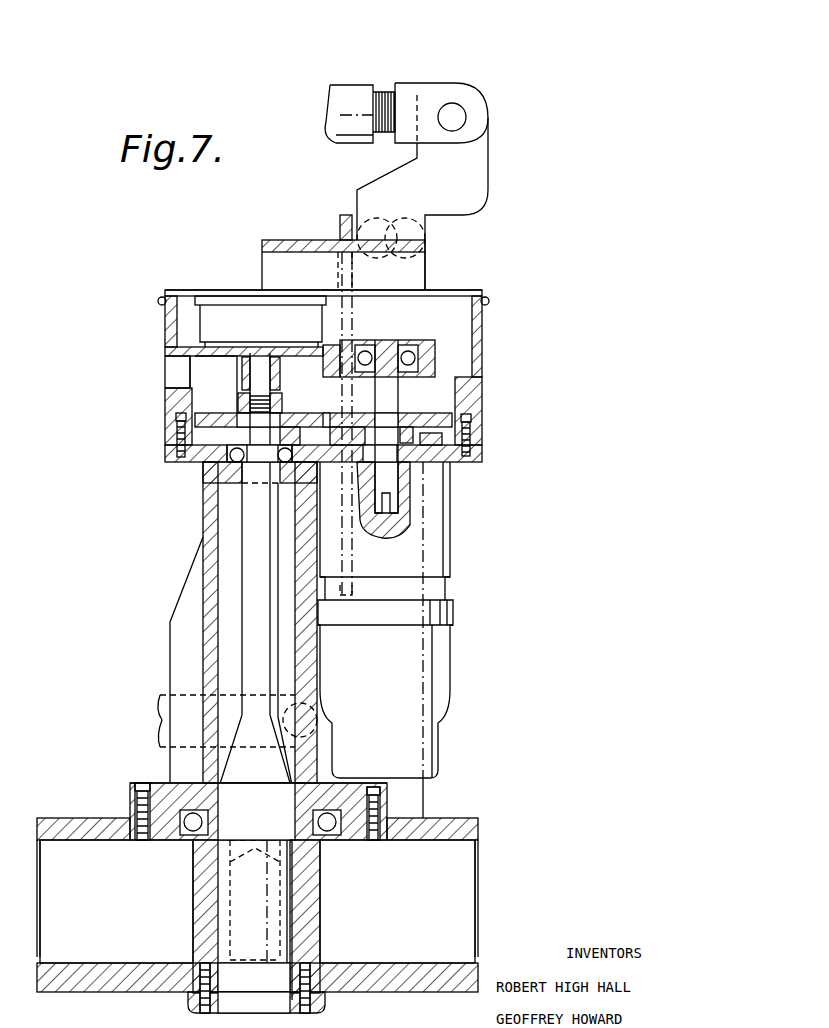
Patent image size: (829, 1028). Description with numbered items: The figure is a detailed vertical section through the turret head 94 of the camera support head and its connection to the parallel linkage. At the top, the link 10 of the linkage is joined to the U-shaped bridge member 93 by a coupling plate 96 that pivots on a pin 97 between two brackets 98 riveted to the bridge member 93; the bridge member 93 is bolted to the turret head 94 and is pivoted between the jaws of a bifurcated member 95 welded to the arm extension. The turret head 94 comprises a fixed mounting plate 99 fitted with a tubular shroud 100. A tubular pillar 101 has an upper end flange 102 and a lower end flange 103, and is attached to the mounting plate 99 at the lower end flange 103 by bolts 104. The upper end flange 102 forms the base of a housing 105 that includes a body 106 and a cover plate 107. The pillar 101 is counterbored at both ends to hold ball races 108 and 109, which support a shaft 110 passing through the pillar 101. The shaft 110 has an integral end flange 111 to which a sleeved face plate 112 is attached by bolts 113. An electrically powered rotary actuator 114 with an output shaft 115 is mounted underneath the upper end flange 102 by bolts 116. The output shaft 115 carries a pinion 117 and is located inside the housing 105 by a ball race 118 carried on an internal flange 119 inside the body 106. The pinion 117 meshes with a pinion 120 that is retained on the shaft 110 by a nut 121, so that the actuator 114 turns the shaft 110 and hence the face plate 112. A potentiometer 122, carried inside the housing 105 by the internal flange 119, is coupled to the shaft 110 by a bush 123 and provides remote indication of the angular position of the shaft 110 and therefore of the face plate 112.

The link 10 is at (330, 92).
The coupling plate 96 is at (463, 92).
The pin 97 is at (455, 120).
The brackets 98 is at (465, 168).
The U-shaped bridge member 93 is at (425, 245).
The cover plate 107 is at (195, 292).
The potentiometer 122 is at (248, 336).
The internal flange 119 is at (340, 345).
The ball race 118 is at (400, 350).
The bush 123 is at (242, 375).
The housing 105 is at (170, 368).
The body 106 is at (175, 412).
The pinion 120 is at (238, 425).
The nut 121 is at (283, 406).
The pinion 117 is at (440, 425).
The upper end flange 102 is at (168, 450).
The ball race 108 is at (232, 470).
The bolts 116 is at (430, 445).
The output shaft 115 is at (388, 495).
The tubular pillar 101 is at (205, 660).
The shaft 110 is at (262, 655).
The electrically powered rotary actuator 114 is at (518, 661).
The bifurcated member 95 is at (156, 718).
The lower end flange 103 is at (160, 783).
The turret head 94 is at (437, 825).
The fixed mounting plate 99 is at (478, 834).
The tubular shroud 100 is at (470, 878).
The ball race 109 is at (185, 840).
The bolts 104 is at (370, 845).
The bolts 113 is at (205, 996).
The integral end flange 111 is at (327, 1004).
The sleeved face plate 112 is at (440, 985).